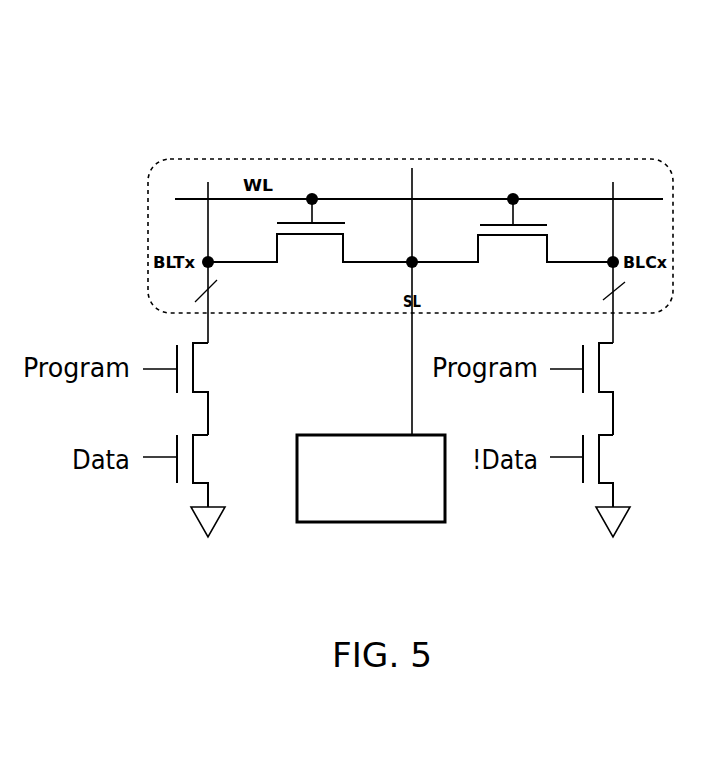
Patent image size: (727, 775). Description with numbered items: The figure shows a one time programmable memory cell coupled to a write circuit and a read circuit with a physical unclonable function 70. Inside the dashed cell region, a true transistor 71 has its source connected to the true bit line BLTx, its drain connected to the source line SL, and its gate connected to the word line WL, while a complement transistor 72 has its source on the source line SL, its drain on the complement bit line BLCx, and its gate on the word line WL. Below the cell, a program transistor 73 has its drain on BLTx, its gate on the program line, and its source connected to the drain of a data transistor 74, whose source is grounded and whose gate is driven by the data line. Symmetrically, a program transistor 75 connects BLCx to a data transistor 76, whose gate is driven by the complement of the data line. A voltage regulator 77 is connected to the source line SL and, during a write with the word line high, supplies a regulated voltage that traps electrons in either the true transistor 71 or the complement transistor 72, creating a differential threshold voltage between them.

The one time programmable memory cell coupled to a write circuit and a read circuit 70 is at (580, 82).
The true transistor 71 is at (387, 238).
The complement transistor 72 is at (591, 236).
The program transistor 73 is at (202, 370).
The data transistor 74 is at (202, 472).
The program transistor 75 is at (606, 371).
The data transistor 76 is at (606, 471).
The voltage regulator 77 is at (307, 535).